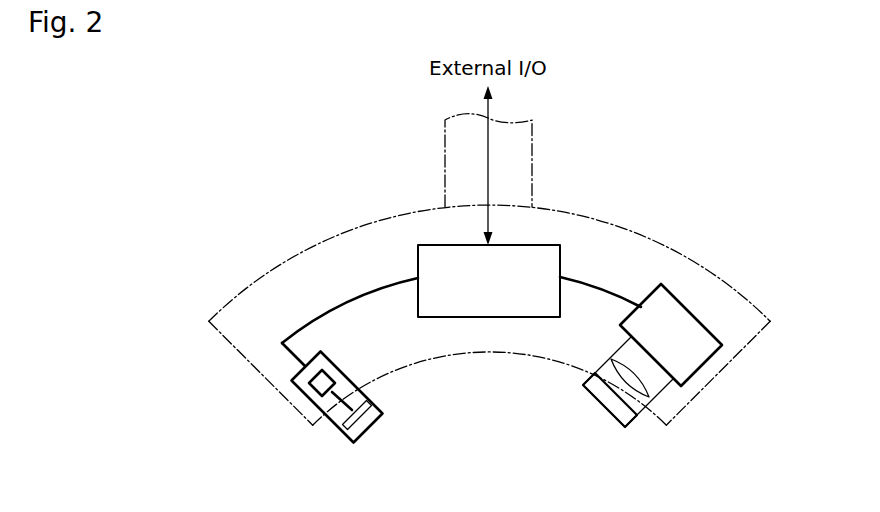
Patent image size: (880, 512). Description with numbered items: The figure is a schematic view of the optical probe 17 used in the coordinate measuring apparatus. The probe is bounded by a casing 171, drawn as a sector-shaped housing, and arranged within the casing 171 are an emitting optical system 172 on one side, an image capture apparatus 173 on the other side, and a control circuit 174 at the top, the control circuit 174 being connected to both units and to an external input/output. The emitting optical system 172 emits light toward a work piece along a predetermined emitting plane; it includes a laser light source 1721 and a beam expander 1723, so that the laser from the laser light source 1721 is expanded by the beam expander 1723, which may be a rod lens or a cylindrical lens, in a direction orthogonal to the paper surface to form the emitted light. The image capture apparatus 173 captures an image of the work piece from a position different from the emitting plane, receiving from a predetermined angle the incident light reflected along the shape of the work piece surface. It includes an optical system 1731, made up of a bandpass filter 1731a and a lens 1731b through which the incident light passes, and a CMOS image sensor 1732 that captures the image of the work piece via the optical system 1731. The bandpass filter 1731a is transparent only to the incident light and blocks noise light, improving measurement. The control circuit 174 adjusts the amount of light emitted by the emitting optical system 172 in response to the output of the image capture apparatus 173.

The optical probe 17 is at (666, 180).
The casing 171 is at (297, 255).
The emitting optical system 172 is at (338, 393).
The laser light source 1721 is at (335, 370).
The beam expander 1723 is at (365, 410).
The image capture apparatus 173 is at (651, 354).
The optical system 1731 is at (630, 401).
The bandpass filter 1731a is at (594, 403).
The lens 1731b is at (647, 397).
The CMOS image sensor 1732 is at (720, 357).
The control circuit 174 is at (418, 263).